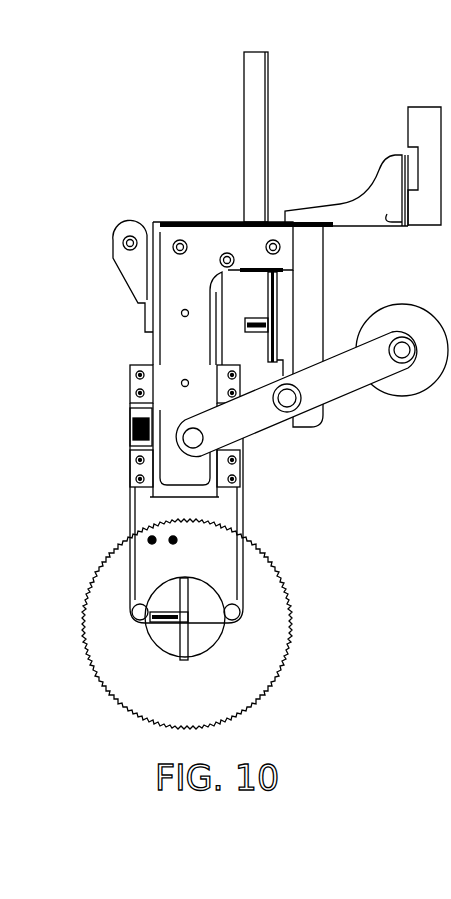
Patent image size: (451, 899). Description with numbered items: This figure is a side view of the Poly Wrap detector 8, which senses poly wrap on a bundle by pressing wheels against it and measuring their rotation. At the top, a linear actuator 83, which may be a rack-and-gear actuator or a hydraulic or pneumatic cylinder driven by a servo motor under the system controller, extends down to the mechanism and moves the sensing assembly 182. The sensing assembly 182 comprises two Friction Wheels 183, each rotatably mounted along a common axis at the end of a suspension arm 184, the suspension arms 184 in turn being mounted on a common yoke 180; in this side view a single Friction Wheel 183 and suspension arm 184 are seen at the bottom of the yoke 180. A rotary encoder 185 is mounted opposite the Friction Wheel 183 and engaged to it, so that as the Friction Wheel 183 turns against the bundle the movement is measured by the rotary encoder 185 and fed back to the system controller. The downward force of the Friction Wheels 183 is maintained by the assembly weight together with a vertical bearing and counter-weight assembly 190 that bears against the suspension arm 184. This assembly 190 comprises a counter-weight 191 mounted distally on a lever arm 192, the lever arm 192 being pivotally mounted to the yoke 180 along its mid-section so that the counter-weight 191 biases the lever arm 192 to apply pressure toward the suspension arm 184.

The Poly Wrap detector 8 is at (175, 170).
The linear actuator 83 is at (269, 133).
The yoke 180 is at (163, 331).
The sensing assembly 182 is at (242, 640).
The Friction Wheel 183 is at (284, 635).
The suspension arm 184 is at (244, 522).
The rotary encoder 185 is at (205, 600).
The vertical bearing and counter-weight assembly 190 is at (406, 305).
The counter-weight 191 is at (405, 396).
The lever arm 192 is at (340, 375).